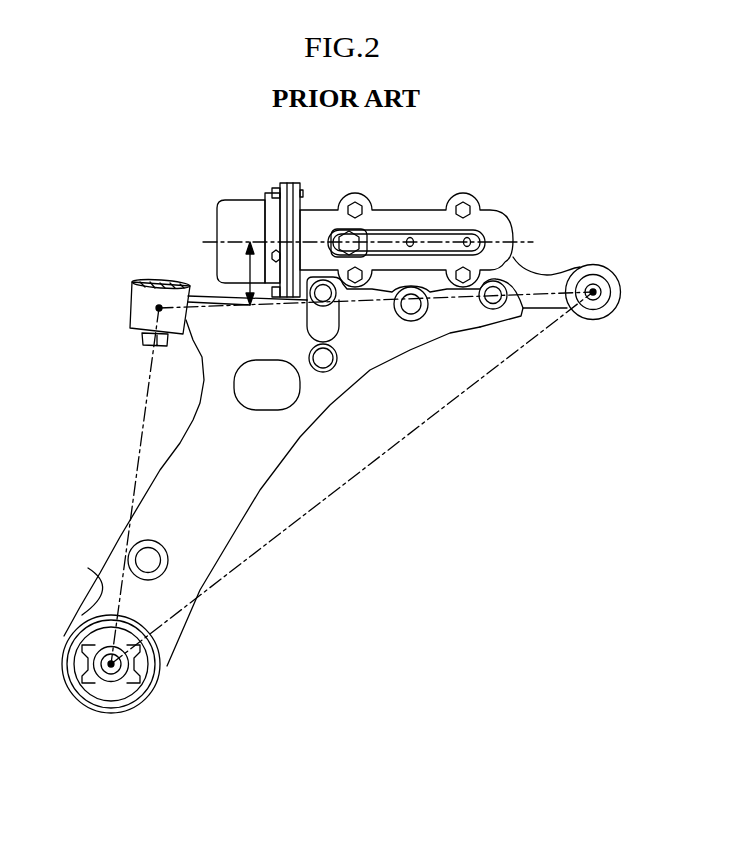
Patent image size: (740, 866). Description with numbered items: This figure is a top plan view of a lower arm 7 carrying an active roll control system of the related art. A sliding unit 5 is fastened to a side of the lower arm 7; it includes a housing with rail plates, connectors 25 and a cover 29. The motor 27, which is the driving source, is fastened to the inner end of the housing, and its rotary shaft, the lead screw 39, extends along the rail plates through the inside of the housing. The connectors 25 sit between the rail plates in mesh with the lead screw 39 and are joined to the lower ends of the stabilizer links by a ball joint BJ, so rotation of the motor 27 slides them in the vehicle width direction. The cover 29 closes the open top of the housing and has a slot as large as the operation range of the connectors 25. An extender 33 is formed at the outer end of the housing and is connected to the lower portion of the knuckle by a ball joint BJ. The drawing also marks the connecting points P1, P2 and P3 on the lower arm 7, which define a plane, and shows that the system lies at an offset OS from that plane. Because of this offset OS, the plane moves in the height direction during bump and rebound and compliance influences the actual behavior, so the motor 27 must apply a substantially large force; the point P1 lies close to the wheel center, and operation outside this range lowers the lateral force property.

The sliding unit 5 is at (411, 222).
The lower arm 7 is at (323, 434).
The connectors 25 is at (343, 238).
The motor 27 is at (237, 210).
The cover 29 is at (487, 217).
The extender 33 is at (535, 272).
The lead screw 39 is at (430, 238).
The ball joint BJ is at (597, 278).
The offset OS is at (247, 273).
The connecting point P1 is at (589, 310).
The connecting point P2 is at (145, 303).
The connecting point P3 is at (126, 670).